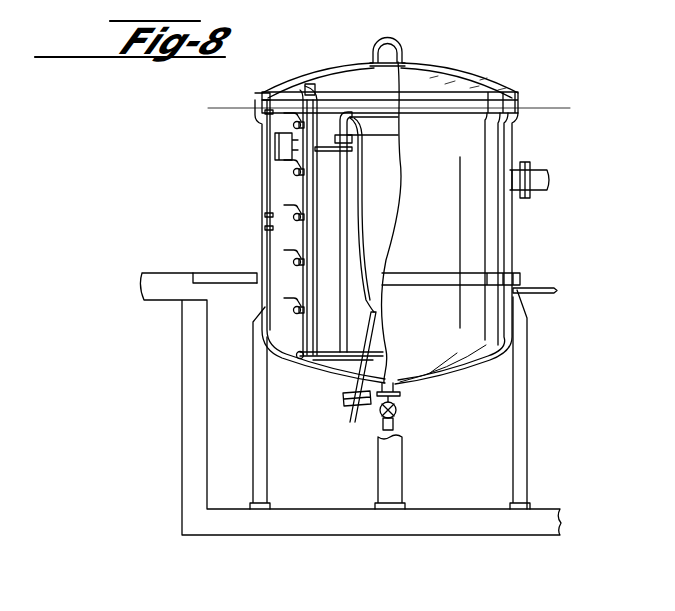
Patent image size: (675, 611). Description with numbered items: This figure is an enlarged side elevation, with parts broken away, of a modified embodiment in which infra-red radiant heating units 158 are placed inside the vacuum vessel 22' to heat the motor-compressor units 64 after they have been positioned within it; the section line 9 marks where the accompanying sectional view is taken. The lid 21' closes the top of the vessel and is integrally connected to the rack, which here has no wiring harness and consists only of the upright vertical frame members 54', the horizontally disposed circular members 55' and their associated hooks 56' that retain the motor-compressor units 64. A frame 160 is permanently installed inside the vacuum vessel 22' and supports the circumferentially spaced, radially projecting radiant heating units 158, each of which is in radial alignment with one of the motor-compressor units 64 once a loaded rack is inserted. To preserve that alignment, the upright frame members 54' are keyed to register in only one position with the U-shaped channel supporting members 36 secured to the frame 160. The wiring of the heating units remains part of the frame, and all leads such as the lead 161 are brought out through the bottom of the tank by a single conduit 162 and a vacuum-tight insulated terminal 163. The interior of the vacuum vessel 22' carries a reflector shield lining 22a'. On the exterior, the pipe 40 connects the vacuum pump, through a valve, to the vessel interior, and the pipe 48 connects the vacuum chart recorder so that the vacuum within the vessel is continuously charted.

The section line 9 is at (229, 152).
The lid 21' is at (390, 68).
The reflector shield lining 22a' is at (371, 149).
The vacuum vessel 22' is at (471, 248).
The U-shaped channel supporting members 36 is at (317, 216).
The motor-compressor units 64 is at (278, 160).
The hooks 56' is at (289, 178).
The upright vertical frame members 54' is at (288, 228).
The horizontally disposed circular members 55' is at (288, 270).
The leads 161 is at (352, 115).
The radiant heating units 158 is at (320, 154).
The frame 160 is at (357, 208).
The conduit 162 is at (369, 340).
The vacuum-tight insulated terminal 163 is at (345, 396).
The pipe 40 is at (540, 172).
The pipe 48 is at (540, 290).